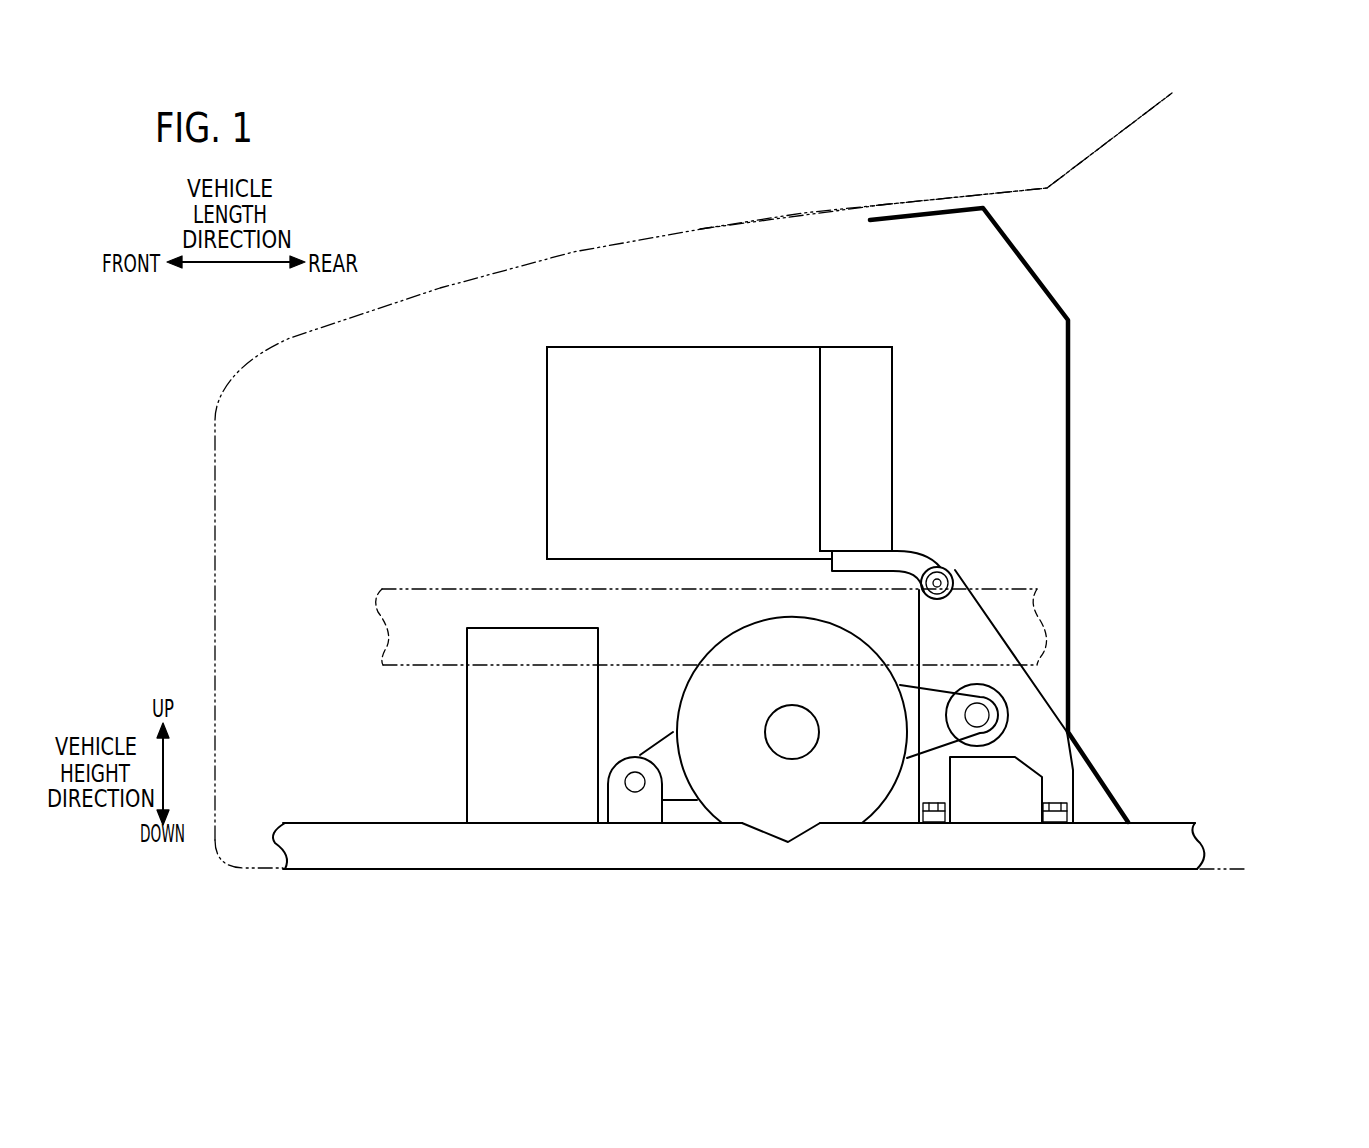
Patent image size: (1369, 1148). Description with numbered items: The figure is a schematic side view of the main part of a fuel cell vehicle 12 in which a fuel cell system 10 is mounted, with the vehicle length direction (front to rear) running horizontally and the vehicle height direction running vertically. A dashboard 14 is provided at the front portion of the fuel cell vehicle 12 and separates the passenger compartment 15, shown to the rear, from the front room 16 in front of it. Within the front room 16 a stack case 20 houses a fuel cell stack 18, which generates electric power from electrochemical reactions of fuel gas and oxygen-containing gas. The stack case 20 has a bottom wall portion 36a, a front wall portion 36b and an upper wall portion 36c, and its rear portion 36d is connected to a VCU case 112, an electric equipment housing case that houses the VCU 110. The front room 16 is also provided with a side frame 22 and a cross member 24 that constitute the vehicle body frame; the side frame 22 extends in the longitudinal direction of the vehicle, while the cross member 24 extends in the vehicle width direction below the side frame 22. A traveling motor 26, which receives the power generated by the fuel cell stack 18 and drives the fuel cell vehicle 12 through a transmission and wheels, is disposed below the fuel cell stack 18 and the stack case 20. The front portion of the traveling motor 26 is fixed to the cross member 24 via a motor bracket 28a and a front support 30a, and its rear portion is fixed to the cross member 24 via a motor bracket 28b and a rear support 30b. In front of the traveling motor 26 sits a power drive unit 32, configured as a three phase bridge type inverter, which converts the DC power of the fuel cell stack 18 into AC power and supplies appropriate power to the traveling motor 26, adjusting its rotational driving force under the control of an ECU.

The fuel cell system 10 is at (532, 418).
The fuel cell vehicle 12 is at (218, 355).
The dashboard 14 is at (1070, 355).
The passenger compartment 15 is at (1115, 193).
The front room 16 is at (805, 247).
The fuel cell stack 18 is at (573, 468).
The stack case 20 is at (573, 515).
The side frame 22 is at (418, 602).
The cross member 24 is at (343, 833).
The traveling motor 26 is at (833, 810).
The motor bracket 28a is at (662, 752).
The motor bracket 28b is at (928, 712).
The front support 30a is at (622, 798).
The rear support 30b is at (1027, 713).
The power drive unit 32 is at (466, 713).
The bottom wall portion 36a is at (653, 559).
The front wall portion 36b is at (547, 382).
The upper wall portion 36c is at (658, 347).
The rear portion 36d is at (820, 418).
The VCU 110 is at (857, 472).
The VCU case 112 is at (867, 347).